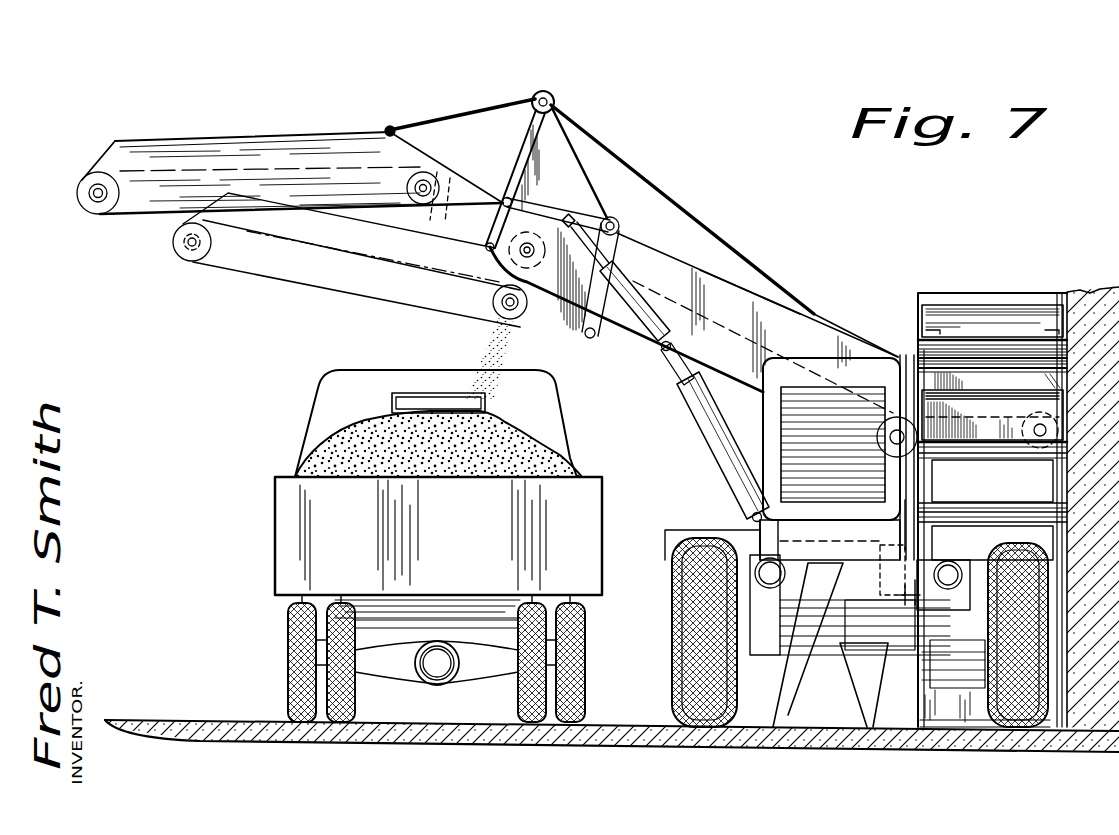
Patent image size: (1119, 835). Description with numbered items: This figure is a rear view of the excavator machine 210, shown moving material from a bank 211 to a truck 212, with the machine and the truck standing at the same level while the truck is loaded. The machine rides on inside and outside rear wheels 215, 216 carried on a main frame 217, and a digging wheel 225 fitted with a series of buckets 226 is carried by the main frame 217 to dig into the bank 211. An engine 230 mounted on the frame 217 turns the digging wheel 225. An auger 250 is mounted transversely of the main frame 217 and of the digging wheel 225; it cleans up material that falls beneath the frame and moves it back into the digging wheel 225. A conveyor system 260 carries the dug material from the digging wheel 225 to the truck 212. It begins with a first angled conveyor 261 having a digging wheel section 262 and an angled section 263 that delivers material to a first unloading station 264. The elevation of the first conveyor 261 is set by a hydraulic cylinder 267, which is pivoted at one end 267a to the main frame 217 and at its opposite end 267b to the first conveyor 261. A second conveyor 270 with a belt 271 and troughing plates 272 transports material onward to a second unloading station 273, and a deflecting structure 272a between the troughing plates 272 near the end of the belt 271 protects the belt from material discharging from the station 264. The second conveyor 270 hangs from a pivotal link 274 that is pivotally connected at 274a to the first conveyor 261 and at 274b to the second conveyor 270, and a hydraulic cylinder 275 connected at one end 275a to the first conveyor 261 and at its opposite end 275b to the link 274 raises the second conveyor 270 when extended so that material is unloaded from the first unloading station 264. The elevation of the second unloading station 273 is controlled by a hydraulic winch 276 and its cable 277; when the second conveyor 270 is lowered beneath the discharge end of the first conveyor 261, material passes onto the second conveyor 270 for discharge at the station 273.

The excavator machine 210 is at (972, 484).
The bank 211 is at (1081, 290).
The truck 212 is at (272, 512).
The inside rear wheel 215 is at (680, 675).
The outside rear wheel 216 is at (1000, 542).
The main frame 217 is at (809, 556).
The digging wheel 225 is at (1012, 300).
The buckets 226 is at (926, 315).
The engine 230 is at (770, 416).
The auger 250 is at (862, 692).
The conveyor system 260 is at (684, 252).
The first angled conveyor 261 is at (720, 298).
The digging wheel section 262 is at (985, 452).
The angled section 263 is at (825, 349).
The first unloading station 264 is at (490, 262).
The hydraulic cylinder 267 is at (678, 432).
The cylinder end pivoted to main frame 267a is at (752, 517).
The cylinder end pivoted to first conveyor 267b is at (663, 353).
The second conveyor 270 is at (142, 204).
The belt 271 is at (263, 173).
The troughing plates 272 is at (346, 143).
The deflecting structure 272a is at (436, 222).
The second unloading station 273 is at (252, 181).
The pivotal link 274 is at (573, 214).
The link pivot to first conveyor 274a is at (604, 225).
The link pivot to second conveyor 274b is at (503, 207).
The hydraulic cylinder 275 is at (614, 305).
The cylinder end connected to first conveyor 275a is at (640, 310).
The cylinder pivot 275b is at (575, 214).
The hydraulic winch 276 is at (812, 305).
The cable 277 is at (782, 291).